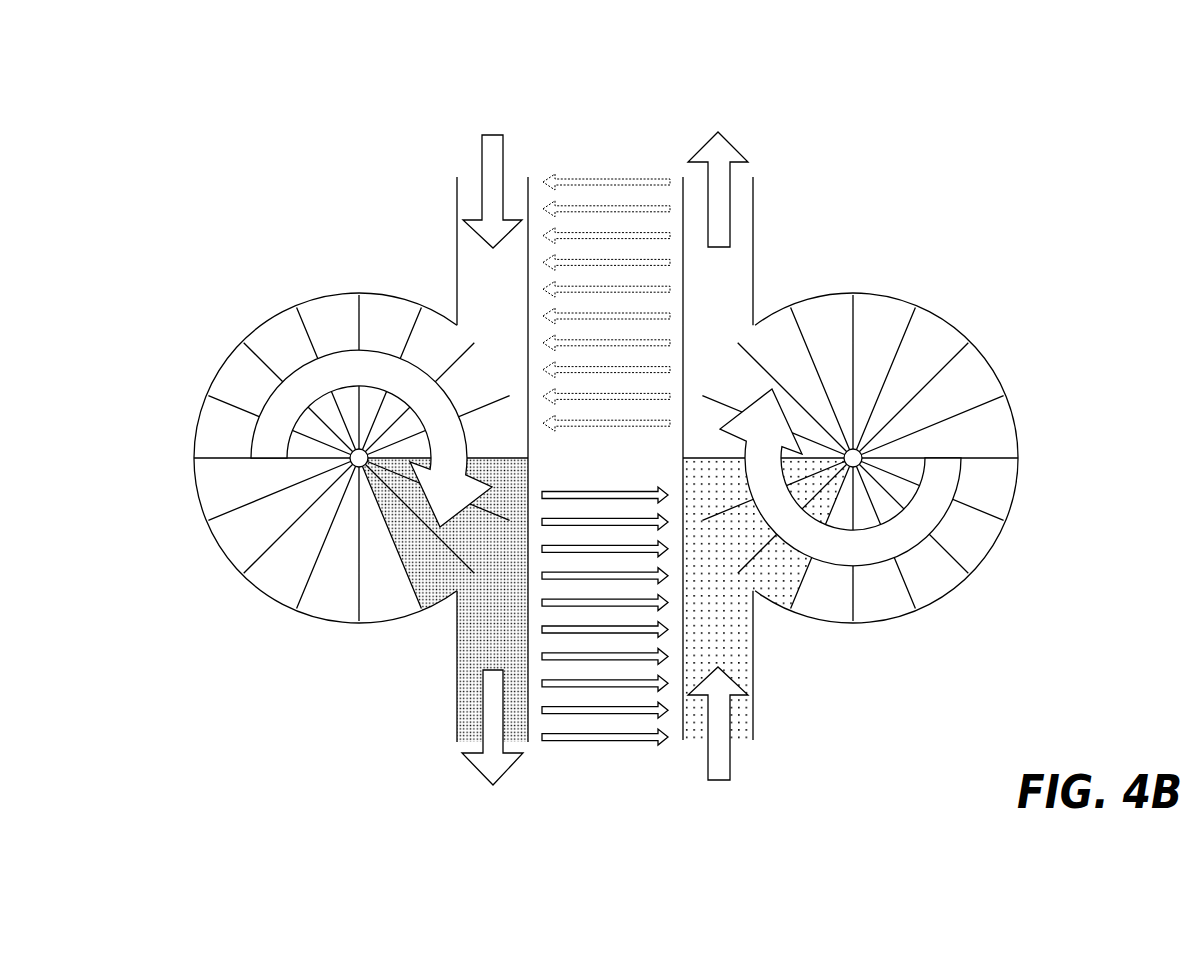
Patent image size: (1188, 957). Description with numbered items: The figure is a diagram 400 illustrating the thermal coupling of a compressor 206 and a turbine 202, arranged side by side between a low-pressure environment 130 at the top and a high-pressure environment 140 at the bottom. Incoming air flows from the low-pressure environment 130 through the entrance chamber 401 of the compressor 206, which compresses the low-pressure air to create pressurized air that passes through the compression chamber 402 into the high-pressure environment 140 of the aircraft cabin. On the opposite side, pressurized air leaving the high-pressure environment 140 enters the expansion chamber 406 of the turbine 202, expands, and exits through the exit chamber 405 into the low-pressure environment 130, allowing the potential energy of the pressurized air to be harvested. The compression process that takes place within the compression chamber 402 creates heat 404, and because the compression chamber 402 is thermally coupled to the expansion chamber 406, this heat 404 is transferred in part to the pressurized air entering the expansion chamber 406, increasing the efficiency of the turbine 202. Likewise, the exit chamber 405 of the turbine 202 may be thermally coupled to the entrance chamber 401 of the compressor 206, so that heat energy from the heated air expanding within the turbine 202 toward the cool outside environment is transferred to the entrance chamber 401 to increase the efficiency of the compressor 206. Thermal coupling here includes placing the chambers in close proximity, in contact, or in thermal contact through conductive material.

The thermodynamic system 400 is at (240, 111).
The low-pressure environment 130 is at (610, 69).
The high-pressure environment 140 is at (611, 855).
The compressor 206 is at (225, 368).
The turbine 202 is at (982, 362).
The entrance chamber 401 is at (480, 308).
The compression chamber 402 is at (482, 595).
The heat 404 is at (606, 459).
The exit chamber 405 is at (730, 310).
The expansion chamber 406 is at (728, 593).